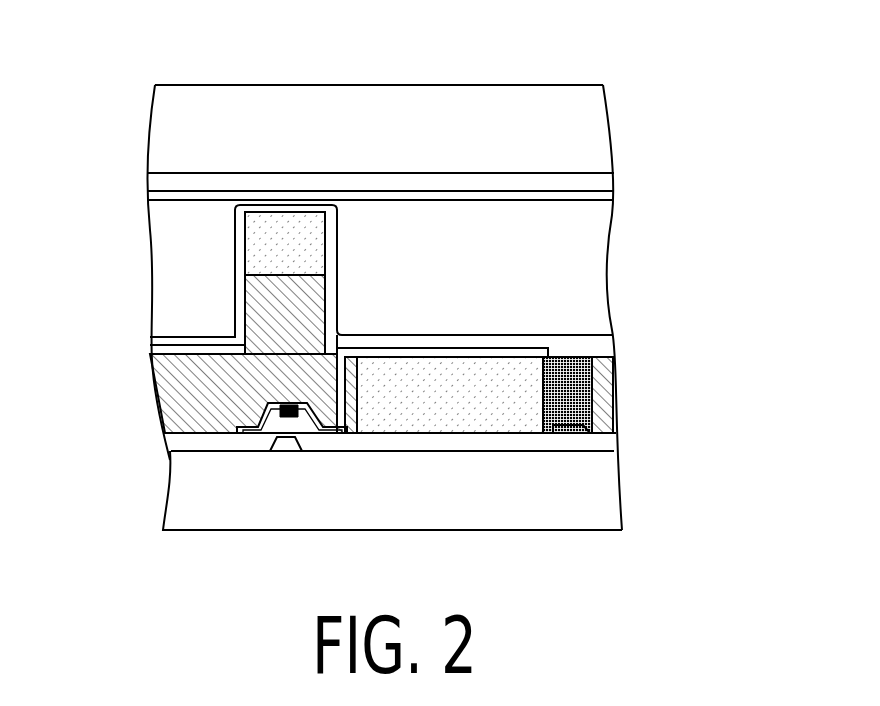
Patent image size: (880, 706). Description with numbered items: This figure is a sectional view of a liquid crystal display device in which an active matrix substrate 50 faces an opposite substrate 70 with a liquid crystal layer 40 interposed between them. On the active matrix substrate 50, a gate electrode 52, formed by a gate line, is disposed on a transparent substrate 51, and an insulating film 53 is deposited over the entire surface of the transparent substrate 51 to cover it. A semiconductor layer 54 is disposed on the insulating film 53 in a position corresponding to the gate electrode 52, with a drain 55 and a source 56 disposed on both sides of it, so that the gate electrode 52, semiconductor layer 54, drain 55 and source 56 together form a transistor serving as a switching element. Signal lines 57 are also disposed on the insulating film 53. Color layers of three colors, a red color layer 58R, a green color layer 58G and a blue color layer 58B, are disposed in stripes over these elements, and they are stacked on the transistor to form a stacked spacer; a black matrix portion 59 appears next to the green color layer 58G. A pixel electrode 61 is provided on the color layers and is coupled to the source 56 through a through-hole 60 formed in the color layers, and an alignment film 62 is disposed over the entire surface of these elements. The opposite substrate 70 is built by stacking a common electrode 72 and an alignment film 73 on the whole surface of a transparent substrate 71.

The opposite substrate 70 is at (282, 72).
The transparent substrate 71 is at (602, 117).
The common electrode 72 is at (608, 178).
The alignment film 73 is at (608, 192).
The liquid crystal layer 40 is at (601, 257).
The green color layer 58G is at (255, 240).
The blue color layer 58B is at (262, 298).
The red color layer 58R is at (160, 413).
The pixel electrode 61 is at (546, 348).
The alignment film 62 is at (612, 344).
The through-hole 60 is at (350, 432).
The black matrix 59 is at (592, 373).
The signal line 57 is at (600, 426).
The insulating film 53 is at (600, 441).
The transparent substrate 51 is at (605, 494).
The gate electrode 52 is at (289, 452).
The semiconductor layer 54 is at (286, 414).
The drain 55 is at (252, 432).
The source 56 is at (333, 430).
The active matrix substrate 50 is at (557, 542).